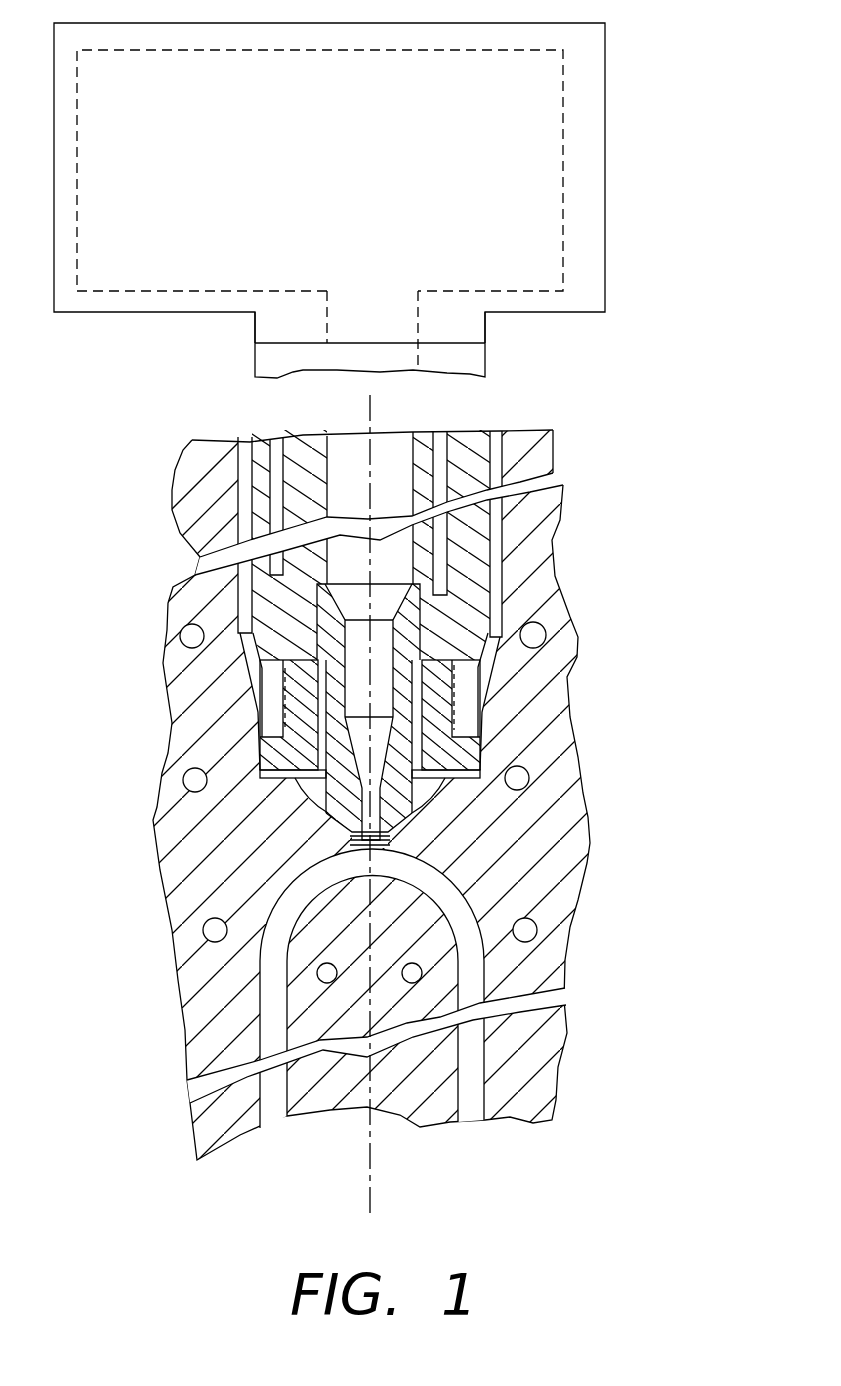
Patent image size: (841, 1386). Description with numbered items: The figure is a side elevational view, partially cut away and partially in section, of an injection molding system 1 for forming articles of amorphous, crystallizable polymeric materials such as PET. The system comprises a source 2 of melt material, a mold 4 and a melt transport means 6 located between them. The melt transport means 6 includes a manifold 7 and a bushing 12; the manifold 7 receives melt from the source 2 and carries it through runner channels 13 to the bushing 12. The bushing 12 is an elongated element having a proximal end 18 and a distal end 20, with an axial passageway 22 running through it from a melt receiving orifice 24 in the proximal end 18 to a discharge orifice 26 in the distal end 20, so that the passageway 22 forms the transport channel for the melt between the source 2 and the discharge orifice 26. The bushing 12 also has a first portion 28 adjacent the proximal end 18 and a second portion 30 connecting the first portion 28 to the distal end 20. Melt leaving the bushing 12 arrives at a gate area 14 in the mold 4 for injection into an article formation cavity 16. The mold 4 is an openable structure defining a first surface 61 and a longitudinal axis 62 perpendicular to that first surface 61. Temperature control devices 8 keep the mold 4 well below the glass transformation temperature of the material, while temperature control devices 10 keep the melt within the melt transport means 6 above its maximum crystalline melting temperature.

The injection molding system 1 is at (680, 36).
The source of melt material 2 is at (368, 177).
The runner channels 13 is at (381, 319).
The manifold 7 is at (270, 321).
The proximal end 18 is at (469, 343).
The melt receiving orifice 24 is at (342, 345).
The mold 4 is at (620, 605).
The melt transport means 6 is at (470, 425).
The first surface 61 is at (533, 432).
The melt transport means temperature control devices 10 is at (277, 450).
The axial passageway 22 is at (408, 490).
The bushing 12 is at (476, 543).
The first portion 28 is at (263, 593).
The second portion 30 is at (482, 748).
The mold temperature control devices 8 is at (520, 775).
The gate area 14 is at (390, 836).
The distal end 20 is at (360, 837).
The discharge orifice 26 is at (352, 842).
The article formation cavity 16 is at (478, 985).
The longitudinal axis 62 is at (372, 1172).